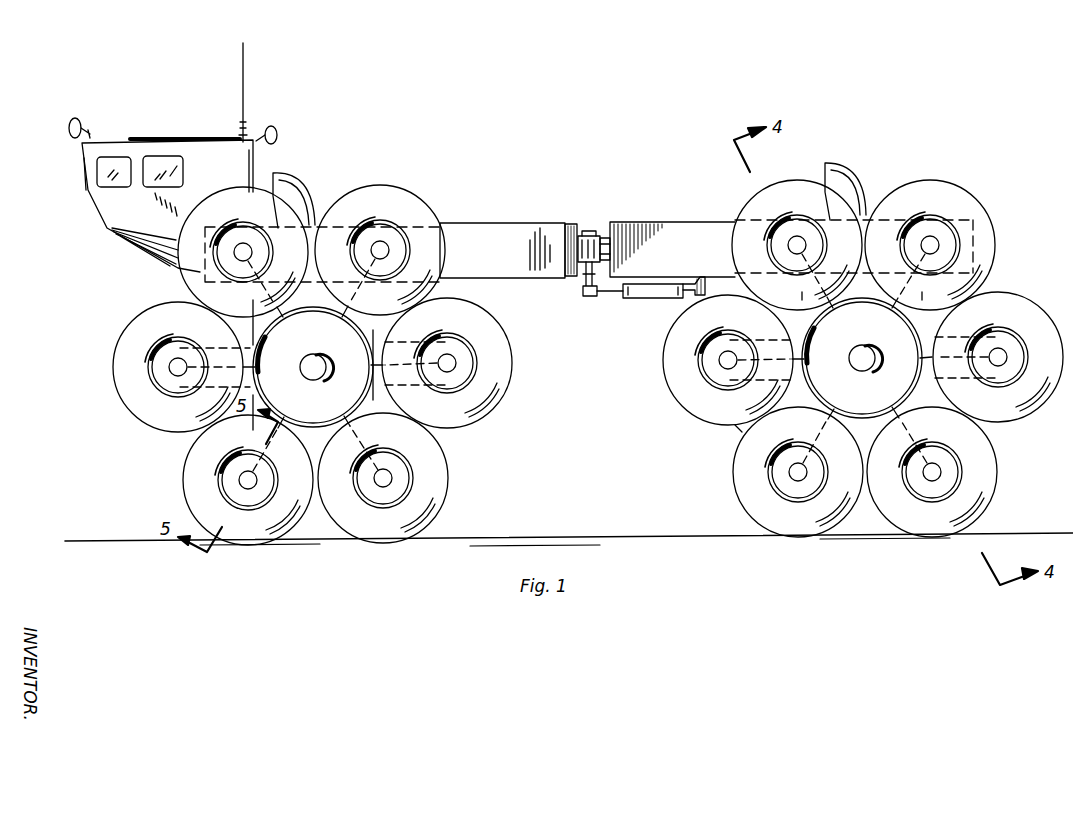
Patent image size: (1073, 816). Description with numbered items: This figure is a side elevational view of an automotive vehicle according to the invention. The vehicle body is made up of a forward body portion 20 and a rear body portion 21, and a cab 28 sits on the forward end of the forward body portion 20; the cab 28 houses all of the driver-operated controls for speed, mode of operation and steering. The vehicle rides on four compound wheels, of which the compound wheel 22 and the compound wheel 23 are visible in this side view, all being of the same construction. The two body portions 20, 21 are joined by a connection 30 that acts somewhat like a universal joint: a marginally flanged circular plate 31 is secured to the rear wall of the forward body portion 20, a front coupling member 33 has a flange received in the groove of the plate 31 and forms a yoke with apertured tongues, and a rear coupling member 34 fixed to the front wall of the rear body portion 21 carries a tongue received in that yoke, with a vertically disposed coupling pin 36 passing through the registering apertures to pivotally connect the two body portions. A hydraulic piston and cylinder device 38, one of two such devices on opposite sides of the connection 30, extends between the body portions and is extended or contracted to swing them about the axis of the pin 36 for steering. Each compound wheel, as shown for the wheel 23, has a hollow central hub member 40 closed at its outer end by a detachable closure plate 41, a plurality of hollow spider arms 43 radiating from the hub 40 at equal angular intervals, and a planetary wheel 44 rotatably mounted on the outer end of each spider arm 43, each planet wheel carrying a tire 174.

The forward body portion 20 is at (487, 238).
The rear body portion 21 is at (684, 232).
The compound wheel 22 is at (116, 386).
The compound wheel 23 is at (668, 386).
The cab 28 is at (196, 140).
The connection 30 is at (585, 234).
The circular plate 31 is at (571, 222).
The front coupling member 33 is at (583, 282).
The rear coupling member 34 is at (603, 238).
The coupling pin 36 is at (597, 236).
The hydraulic piston and cylinder device 38 is at (662, 299).
The central hub member 40 is at (848, 427).
The closure plate 41 is at (834, 383).
The spider arm 43 is at (925, 400).
The planetary wheel 44 is at (738, 430).
The tire 174 is at (745, 507).